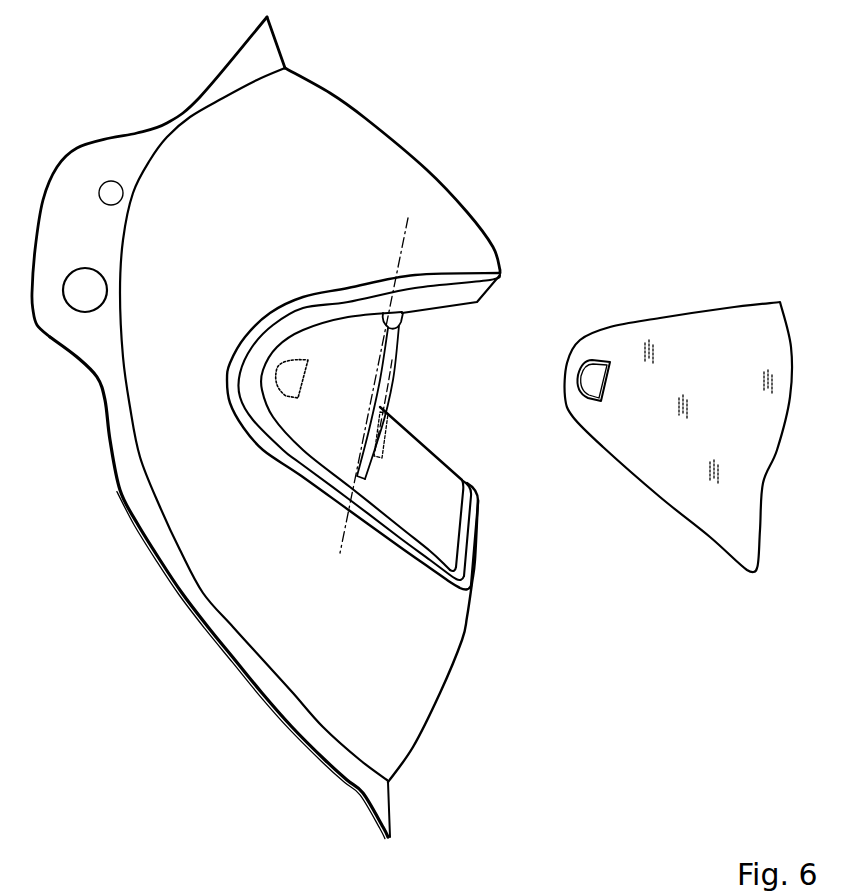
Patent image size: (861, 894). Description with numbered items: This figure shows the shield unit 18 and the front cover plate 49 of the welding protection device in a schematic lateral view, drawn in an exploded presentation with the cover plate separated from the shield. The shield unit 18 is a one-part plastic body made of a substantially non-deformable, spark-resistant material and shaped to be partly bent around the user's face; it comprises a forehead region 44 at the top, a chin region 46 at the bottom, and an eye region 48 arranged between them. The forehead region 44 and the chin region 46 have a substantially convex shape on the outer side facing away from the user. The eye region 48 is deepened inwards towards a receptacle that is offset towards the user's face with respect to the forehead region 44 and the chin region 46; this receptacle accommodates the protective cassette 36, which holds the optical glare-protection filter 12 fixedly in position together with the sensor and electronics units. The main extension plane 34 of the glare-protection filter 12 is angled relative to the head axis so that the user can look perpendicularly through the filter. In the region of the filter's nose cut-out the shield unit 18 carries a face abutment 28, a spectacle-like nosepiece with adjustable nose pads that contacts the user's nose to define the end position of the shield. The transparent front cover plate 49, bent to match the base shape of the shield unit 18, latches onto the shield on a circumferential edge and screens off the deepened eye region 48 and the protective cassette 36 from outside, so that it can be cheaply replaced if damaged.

The shield unit 18 is at (428, 129).
The forehead region 44 is at (385, 177).
The chin region 46 is at (423, 667).
The main extension plane 34 is at (407, 237).
The optical glare-protection filter 12 is at (383, 365).
The face abutment 28 is at (388, 447).
The eye region 48 is at (430, 487).
The protective cassette 36 is at (348, 388).
The front cover plate 49 is at (702, 347).